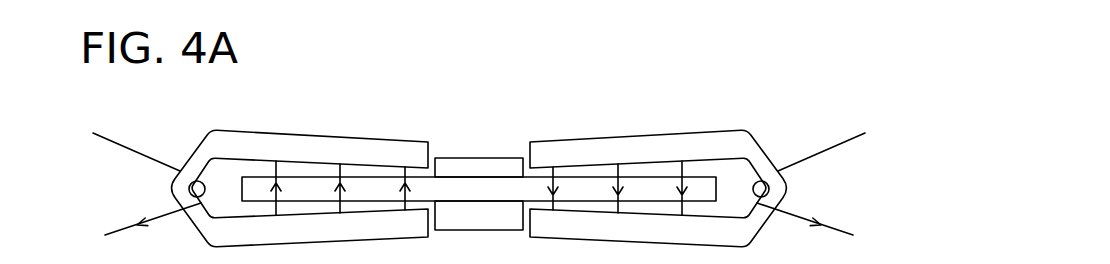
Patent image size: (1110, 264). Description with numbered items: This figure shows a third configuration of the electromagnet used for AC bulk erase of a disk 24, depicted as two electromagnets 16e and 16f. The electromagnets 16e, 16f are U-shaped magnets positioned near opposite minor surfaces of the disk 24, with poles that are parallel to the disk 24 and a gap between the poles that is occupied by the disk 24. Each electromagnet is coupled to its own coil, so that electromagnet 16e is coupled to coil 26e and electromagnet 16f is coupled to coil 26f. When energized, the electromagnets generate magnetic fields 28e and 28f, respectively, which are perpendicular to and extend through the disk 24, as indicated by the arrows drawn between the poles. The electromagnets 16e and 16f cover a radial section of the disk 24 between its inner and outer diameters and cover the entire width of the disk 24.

The electromagnet 16e is at (350, 136).
The electromagnet 16f is at (578, 138).
The disk 24 is at (705, 178).
The coil 26e is at (121, 144).
The coil 26f is at (823, 153).
The magnetic field 28e is at (339, 188).
The magnetic field 28f is at (623, 178).